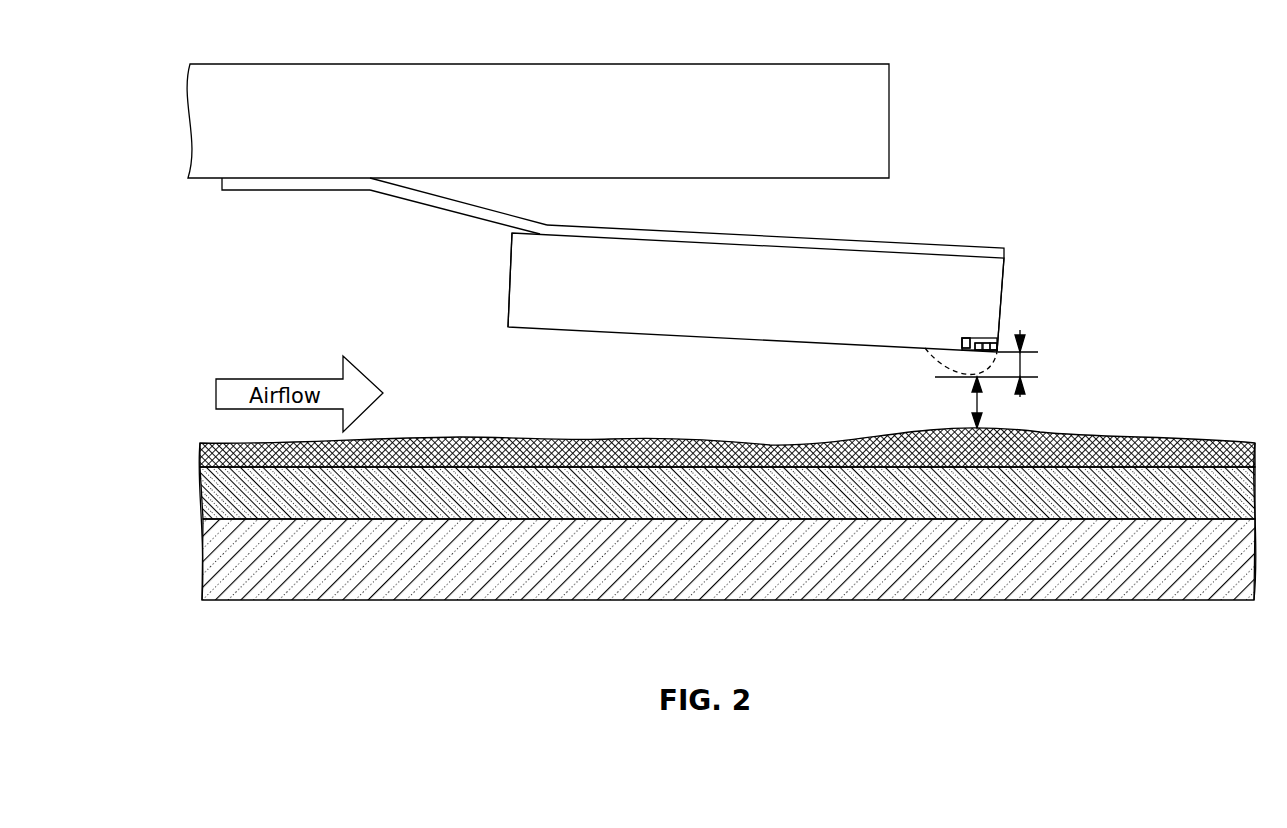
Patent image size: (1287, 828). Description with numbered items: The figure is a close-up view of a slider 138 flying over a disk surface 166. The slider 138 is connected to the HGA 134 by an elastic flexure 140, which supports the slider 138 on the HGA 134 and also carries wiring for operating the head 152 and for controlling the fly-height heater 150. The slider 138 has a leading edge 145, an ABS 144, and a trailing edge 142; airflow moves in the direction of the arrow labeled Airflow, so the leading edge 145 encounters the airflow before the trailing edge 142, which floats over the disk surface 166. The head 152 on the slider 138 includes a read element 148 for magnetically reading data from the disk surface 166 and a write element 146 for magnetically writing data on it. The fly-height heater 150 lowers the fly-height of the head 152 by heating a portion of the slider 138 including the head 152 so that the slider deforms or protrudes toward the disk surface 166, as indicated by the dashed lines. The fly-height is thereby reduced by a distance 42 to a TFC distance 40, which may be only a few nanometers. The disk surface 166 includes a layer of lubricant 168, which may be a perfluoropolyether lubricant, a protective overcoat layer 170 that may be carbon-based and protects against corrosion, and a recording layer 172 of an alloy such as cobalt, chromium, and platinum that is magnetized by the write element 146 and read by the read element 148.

The HGA 134 is at (889, 100).
The slider 138 is at (1010, 291).
The elastic flexure 140 is at (433, 208).
The trailing edge 142 is at (1003, 322).
The ABS 144 is at (607, 333).
The leading edge 145 is at (508, 290).
The write element 146 is at (987, 343).
The read element 148 is at (960, 338).
The fly-height heater 150 is at (958, 343).
The head 152 is at (976, 201).
The disk surface 166 is at (700, 492).
The layer of lubricant 168 is at (668, 446).
The protective overcoat layer 170 is at (212, 495).
The recording layer 172 is at (655, 580).
The TFC distance 40 is at (974, 398).
The distance 42 is at (1026, 365).